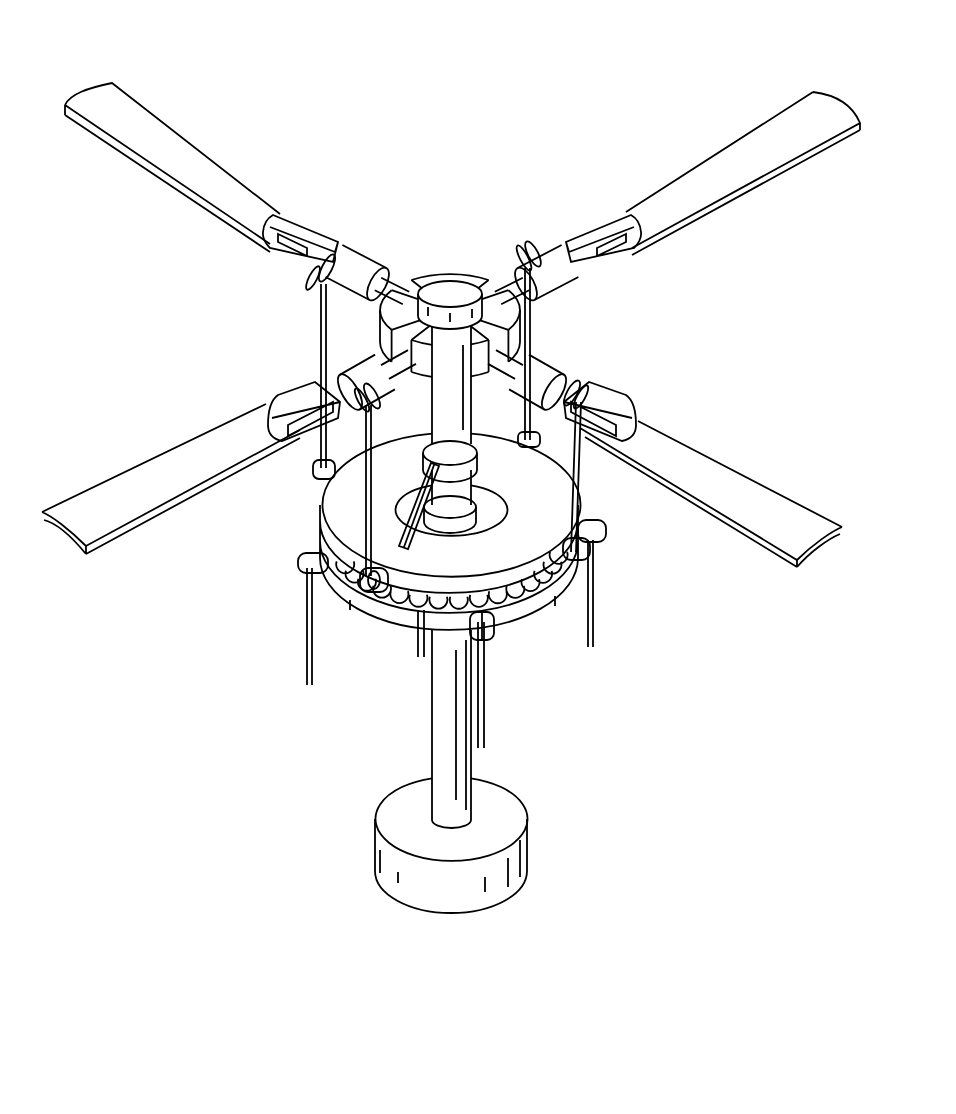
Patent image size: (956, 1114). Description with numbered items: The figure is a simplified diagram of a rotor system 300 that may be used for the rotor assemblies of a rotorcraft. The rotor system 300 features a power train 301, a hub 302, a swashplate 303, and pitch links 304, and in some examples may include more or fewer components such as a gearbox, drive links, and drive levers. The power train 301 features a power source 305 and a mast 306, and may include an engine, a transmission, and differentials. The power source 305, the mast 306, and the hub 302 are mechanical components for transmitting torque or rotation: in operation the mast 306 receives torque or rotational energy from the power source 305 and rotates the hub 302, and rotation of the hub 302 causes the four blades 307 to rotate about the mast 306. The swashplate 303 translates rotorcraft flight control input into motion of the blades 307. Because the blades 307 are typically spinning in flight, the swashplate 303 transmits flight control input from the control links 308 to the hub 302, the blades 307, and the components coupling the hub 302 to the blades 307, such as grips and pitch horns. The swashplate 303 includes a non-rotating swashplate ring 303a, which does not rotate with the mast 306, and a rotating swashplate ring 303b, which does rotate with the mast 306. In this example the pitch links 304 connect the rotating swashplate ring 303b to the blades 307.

The rotor system 300 is at (503, 80).
The power train 301 is at (552, 819).
The hub 302 is at (408, 288).
The swashplate 303 is at (612, 493).
The non-rotating swashplate ring 303a is at (520, 623).
The rotating swashplate ring 303b is at (320, 488).
The pitch links 304 is at (317, 333).
The power source 305 is at (527, 850).
The mast 306 is at (430, 730).
The blades 307 is at (202, 157).
The control links 308 is at (303, 637).